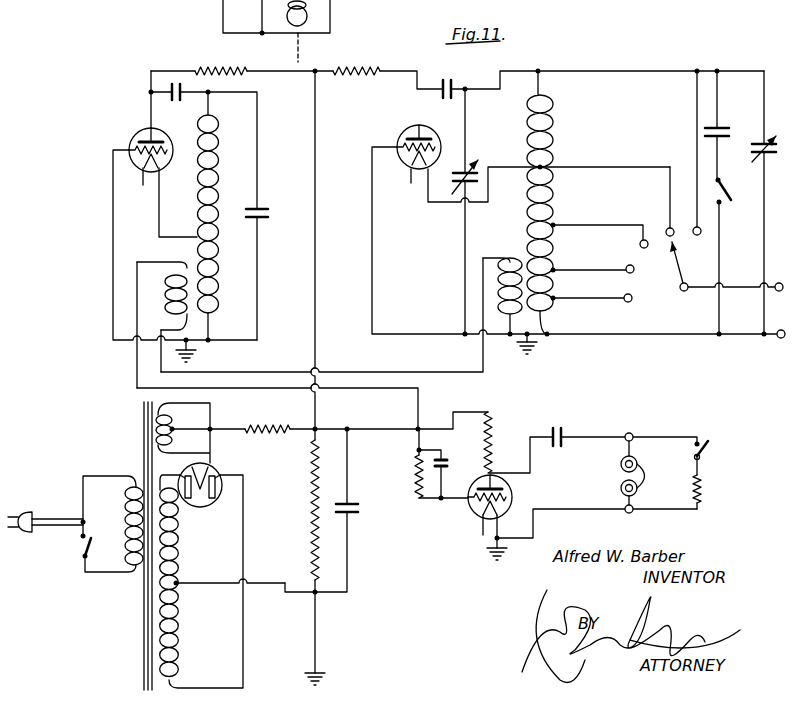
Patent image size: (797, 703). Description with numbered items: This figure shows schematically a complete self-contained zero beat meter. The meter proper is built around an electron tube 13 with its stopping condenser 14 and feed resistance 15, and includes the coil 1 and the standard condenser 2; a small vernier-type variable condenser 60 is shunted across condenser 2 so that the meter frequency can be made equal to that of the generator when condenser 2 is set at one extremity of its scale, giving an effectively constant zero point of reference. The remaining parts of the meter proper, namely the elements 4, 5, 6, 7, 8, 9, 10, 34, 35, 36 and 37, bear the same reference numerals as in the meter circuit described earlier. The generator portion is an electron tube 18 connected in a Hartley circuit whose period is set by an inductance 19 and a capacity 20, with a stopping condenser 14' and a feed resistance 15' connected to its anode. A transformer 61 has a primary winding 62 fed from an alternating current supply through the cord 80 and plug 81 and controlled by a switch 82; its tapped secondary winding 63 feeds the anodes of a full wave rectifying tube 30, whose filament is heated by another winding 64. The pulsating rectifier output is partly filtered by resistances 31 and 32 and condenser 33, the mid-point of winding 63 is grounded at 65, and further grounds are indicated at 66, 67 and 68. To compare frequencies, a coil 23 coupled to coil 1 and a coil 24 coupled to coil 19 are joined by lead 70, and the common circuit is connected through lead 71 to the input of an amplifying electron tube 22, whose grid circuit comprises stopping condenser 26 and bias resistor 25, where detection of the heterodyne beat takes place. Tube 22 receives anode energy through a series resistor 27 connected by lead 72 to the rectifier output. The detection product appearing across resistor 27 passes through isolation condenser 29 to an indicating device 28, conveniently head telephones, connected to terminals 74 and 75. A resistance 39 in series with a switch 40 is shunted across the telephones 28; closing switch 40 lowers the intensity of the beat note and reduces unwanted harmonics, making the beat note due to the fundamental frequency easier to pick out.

The coil 1 is at (558, 140).
The standard condenser 2 is at (456, 173).
The coil lower terminal connection 4 is at (548, 337).
The tap terminal 5 is at (592, 305).
The tap terminal 6 is at (593, 278).
The tap terminal 7 is at (600, 239).
The switch contact 8 is at (662, 201).
The switch contact 9 is at (691, 223).
The condenser 10 is at (740, 126).
The electron tube 13 is at (403, 134).
The stopping condenser 14 is at (454, 76).
The stopping condenser 14' is at (170, 106).
The feed resistance 15 is at (357, 59).
The feed resistance 15' is at (221, 59).
The electron tube 18 is at (139, 133).
The inductance 19 is at (196, 188).
The capacity 20 is at (267, 208).
The amplifying electron tube 22 is at (513, 488).
The coil 23 is at (508, 258).
The coil 24 is at (162, 296).
The bias resistor 25 is at (413, 472).
The stopping condenser 26 is at (452, 456).
The series resistor 27 is at (501, 442).
The indicating device 28 is at (620, 467).
The isolation condenser 29 is at (564, 428).
The full wave rectifying tube 30 is at (204, 497).
The resistance 31 is at (272, 424).
The resistance 32 is at (311, 506).
The condenser 33 is at (356, 513).
The output terminal 34 is at (778, 339).
The output terminal 35 is at (779, 283).
The switch arm 36 is at (680, 278).
The switch 37 is at (731, 192).
The resistance 39 is at (703, 489).
The switch 40 is at (710, 446).
The variable condenser 60 is at (768, 140).
The transformer 61 is at (143, 630).
The primary winding 62 is at (132, 578).
The tapped secondary winding 63 is at (182, 624).
The winding 64 is at (174, 420).
The ground 65 is at (325, 671).
The ground 66 is at (196, 352).
The ground 67 is at (540, 355).
The ground 68 is at (490, 550).
The lead 70 is at (338, 371).
The lead 71 is at (420, 389).
The lead 72 is at (491, 412).
The terminal 74 is at (634, 433).
The terminal 75 is at (625, 505).
The cord 80 is at (52, 518).
The plug 81 is at (29, 510).
The switch 82 is at (82, 541).